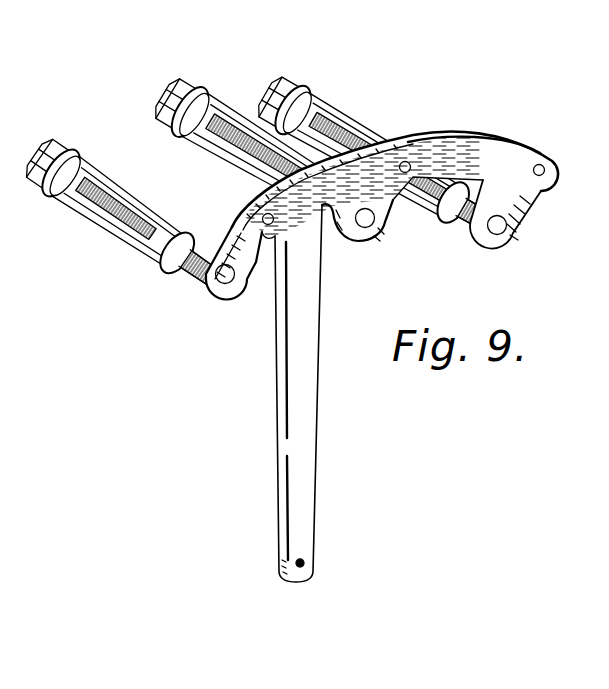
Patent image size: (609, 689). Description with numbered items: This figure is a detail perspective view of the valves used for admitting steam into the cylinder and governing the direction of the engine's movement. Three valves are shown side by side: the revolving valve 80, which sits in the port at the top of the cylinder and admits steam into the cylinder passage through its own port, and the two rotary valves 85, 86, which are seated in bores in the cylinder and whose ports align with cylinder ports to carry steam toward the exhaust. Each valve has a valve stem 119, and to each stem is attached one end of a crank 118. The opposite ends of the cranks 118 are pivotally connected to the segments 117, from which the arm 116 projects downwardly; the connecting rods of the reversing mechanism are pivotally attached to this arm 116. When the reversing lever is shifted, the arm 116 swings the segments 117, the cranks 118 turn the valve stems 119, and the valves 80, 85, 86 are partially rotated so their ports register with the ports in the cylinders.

The revolving valve 80 is at (210, 104).
The rotary valve 85 is at (77, 160).
The rotary valve 86 is at (349, 128).
The arm 116 is at (313, 414).
The segments 117 is at (450, 132).
The cranks 118 is at (232, 227).
The valve stems 119 is at (184, 266).